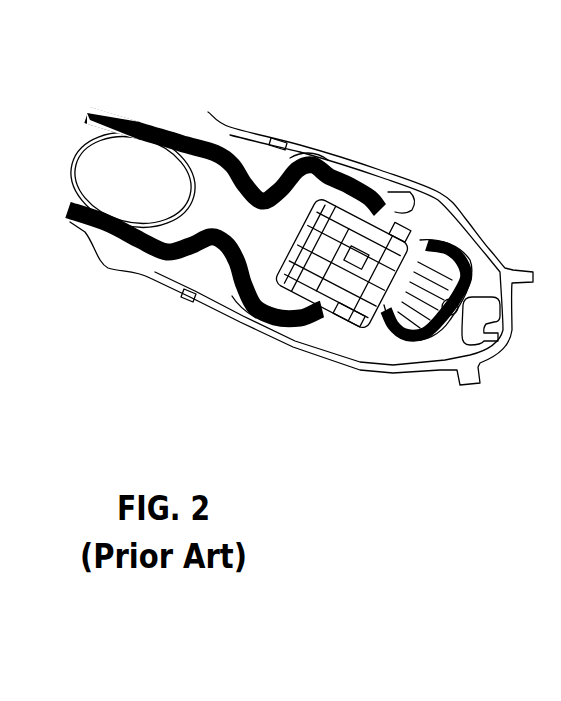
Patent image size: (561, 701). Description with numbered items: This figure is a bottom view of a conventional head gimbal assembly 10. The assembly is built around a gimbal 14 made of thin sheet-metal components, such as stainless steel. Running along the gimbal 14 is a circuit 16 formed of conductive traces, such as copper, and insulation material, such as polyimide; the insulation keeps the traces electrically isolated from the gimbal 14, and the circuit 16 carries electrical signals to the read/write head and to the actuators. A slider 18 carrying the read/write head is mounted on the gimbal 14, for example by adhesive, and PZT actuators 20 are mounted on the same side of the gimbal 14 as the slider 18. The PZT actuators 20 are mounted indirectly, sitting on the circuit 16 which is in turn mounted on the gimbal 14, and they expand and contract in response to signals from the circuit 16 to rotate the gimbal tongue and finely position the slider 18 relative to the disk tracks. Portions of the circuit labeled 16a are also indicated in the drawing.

The head gimbal assembly 10 is at (296, 270).
The gimbal 14 is at (296, 248).
The circuit 16 is at (230, 240).
The seal end portion 16a is at (234, 221).
The slider 18 is at (412, 369).
The PZT actuators 20 is at (352, 297).